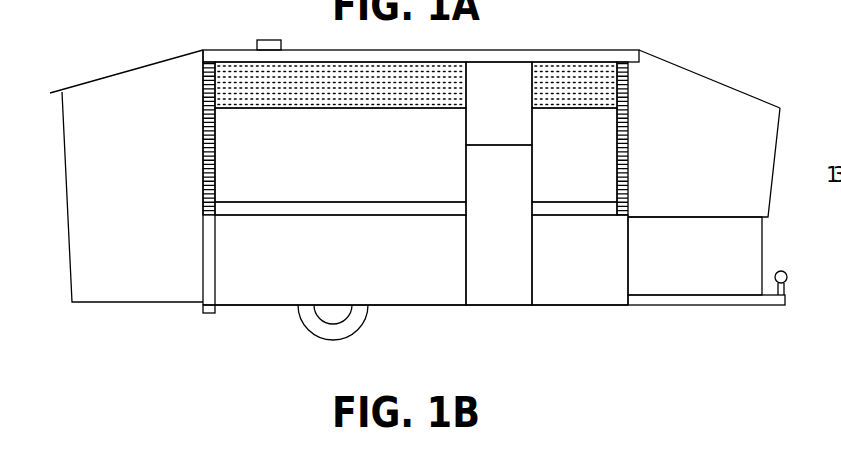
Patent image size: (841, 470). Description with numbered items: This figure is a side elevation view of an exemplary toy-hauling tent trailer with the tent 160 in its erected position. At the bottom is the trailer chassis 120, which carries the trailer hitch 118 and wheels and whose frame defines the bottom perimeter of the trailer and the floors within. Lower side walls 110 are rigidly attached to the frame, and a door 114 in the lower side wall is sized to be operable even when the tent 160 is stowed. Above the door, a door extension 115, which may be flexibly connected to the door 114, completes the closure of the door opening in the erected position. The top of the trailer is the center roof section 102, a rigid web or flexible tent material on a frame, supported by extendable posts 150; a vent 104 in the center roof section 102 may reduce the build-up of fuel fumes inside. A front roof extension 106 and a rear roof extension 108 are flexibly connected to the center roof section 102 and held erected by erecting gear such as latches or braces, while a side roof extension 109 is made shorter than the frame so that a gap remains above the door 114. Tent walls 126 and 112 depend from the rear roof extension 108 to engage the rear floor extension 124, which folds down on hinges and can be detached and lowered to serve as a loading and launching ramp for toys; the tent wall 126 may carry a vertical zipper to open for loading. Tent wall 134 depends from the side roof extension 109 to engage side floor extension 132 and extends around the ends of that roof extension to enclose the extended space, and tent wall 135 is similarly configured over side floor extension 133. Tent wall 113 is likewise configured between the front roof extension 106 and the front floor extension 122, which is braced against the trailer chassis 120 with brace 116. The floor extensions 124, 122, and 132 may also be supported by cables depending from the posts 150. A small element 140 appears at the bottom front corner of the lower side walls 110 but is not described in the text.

The center roof section 102 is at (567, 50).
The vent 104 is at (260, 40).
The front roof extension 106 is at (692, 70).
The rear roof extension 108 is at (140, 64).
The side roof extension 109 is at (435, 109).
The lower side walls 110 is at (271, 269).
The tent wall 112 is at (147, 184).
The tent wall 113 is at (711, 160).
The door 114 is at (510, 279).
The door extension 115 is at (510, 102).
The brace 116 is at (763, 252).
The trailer hitch 118 is at (790, 278).
The trailer chassis 120 is at (650, 305).
The front floor extension 122 is at (657, 217).
The rear floor extension 124 is at (118, 302).
The tent wall 126 is at (64, 195).
The side floor extension 132 is at (330, 198).
The side floor extension 133 is at (594, 198).
The tent wall 134 is at (333, 159).
The tent wall 135 is at (592, 159).
The stabilizer 140 is at (203, 312).
The extendable posts 150 is at (201, 145).
The tent 160 is at (758, 72).